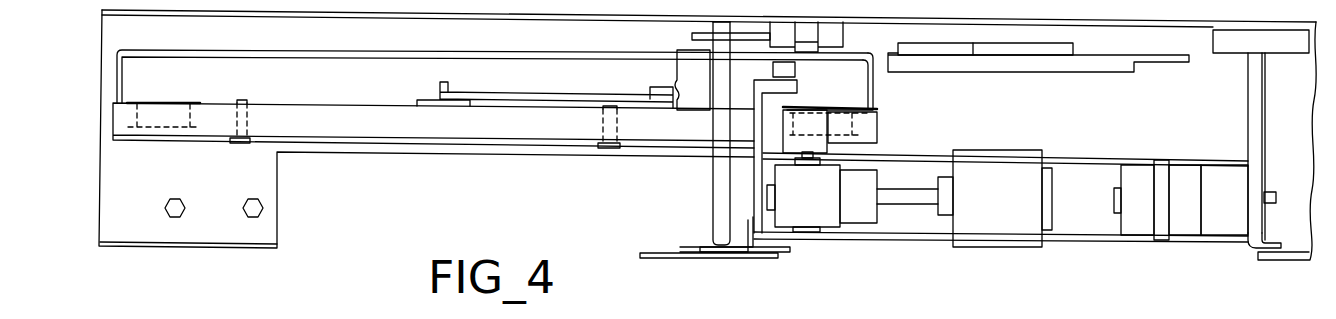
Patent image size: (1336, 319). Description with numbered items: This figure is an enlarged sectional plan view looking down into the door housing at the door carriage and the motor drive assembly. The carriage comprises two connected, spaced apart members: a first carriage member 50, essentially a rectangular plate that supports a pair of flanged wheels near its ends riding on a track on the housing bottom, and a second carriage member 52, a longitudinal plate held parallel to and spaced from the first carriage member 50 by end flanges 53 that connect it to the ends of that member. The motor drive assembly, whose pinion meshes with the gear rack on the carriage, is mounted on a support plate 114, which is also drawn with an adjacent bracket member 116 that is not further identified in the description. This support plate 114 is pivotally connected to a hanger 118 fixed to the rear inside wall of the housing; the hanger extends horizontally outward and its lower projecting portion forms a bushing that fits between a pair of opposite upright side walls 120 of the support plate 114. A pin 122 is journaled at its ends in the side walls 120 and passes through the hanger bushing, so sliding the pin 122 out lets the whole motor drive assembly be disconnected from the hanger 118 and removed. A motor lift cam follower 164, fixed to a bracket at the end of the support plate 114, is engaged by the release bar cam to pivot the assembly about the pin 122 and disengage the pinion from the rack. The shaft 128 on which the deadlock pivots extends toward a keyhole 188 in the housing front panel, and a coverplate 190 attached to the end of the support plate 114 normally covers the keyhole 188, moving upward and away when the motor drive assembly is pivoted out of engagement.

The first carriage member 50 is at (510, 145).
The second carriage member 52 is at (568, 52).
The end flanges 53 is at (873, 95).
The support plate 114 is at (1070, 208).
The support bracket 116 is at (758, 175).
The hanger 118 is at (1258, 185).
The upright side walls 120 is at (1098, 158).
The pin 122 is at (1254, 250).
The shaft 128 is at (718, 210).
The motor lift cam follower 164 is at (798, 66).
The keyhole 188 is at (707, 258).
The coverplate 190 is at (753, 245).